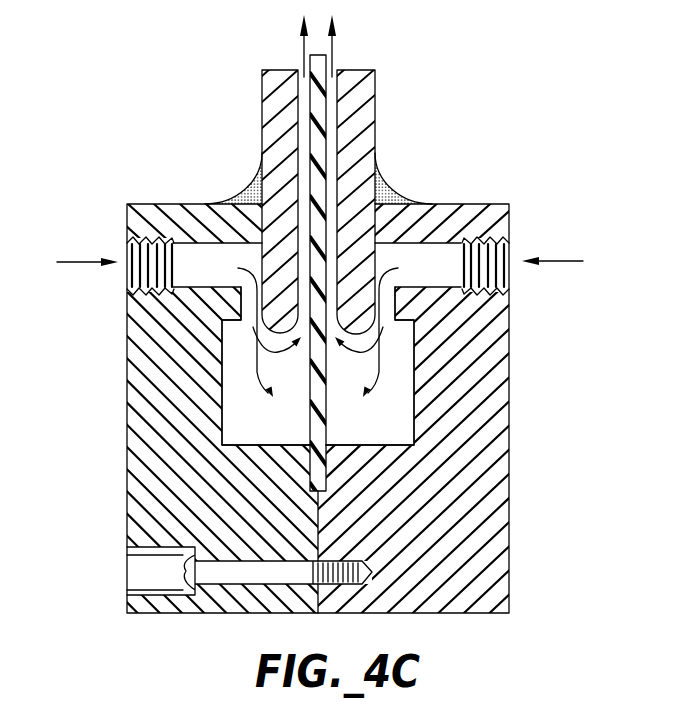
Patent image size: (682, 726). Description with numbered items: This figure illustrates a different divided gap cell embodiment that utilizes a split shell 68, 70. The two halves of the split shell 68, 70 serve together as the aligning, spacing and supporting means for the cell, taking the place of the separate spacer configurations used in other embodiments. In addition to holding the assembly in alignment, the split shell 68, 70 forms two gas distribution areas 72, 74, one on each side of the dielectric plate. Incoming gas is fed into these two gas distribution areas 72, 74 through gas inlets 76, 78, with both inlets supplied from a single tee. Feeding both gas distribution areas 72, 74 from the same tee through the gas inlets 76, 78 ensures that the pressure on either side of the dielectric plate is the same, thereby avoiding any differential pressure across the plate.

The split shell 68 is at (167, 533).
The split shell 70 is at (485, 543).
The gas distribution area 72 is at (237, 428).
The gas distribution area 74 is at (405, 415).
The gas inlet 76 is at (137, 251).
The gas inlet 78 is at (508, 246).